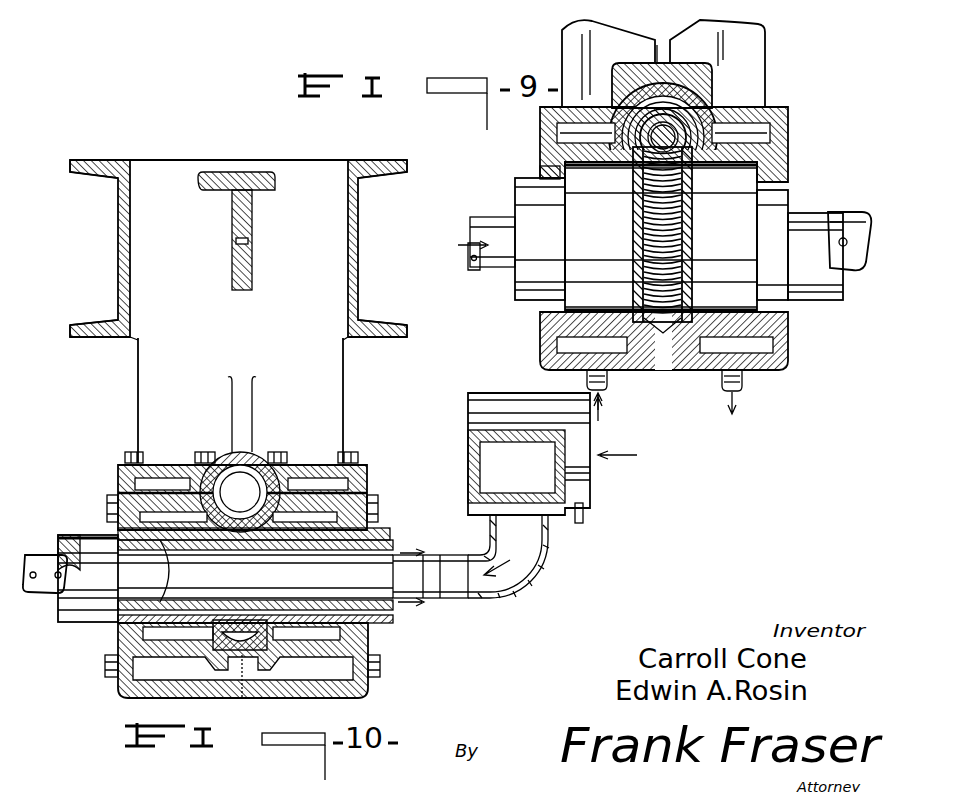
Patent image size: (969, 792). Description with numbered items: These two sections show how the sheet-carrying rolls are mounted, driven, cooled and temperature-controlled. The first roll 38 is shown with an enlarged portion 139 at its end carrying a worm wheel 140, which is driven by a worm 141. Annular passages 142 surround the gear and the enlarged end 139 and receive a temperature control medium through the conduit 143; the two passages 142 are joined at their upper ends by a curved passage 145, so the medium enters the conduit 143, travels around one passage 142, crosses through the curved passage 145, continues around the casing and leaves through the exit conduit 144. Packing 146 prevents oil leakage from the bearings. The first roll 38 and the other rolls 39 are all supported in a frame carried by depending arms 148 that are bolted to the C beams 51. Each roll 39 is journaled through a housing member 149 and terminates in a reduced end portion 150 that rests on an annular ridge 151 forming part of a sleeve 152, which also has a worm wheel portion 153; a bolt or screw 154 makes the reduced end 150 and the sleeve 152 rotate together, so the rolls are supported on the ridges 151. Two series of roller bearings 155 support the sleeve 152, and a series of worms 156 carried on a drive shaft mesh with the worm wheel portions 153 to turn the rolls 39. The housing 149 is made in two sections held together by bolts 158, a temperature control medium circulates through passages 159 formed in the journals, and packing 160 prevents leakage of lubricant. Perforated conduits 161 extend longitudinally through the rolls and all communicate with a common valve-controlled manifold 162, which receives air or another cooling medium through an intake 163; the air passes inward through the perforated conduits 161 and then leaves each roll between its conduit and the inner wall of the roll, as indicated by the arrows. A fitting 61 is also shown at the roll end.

In FIG. 9, the first roll 38 is at (800, 183).
In FIG. 10, the rolls 39 is at (97, 595).
In FIG. 10, the C beams 51 is at (117, 235).
In FIG. 9, the fitting 61 is at (848, 265).
In FIG. 9, the enlarged portion 139 is at (777, 149).
In FIG. 9, the worm wheel 140 is at (642, 222).
In FIG. 9, the worm 141 is at (713, 93).
In FIG. 9, the passages 142 is at (567, 128).
In FIG. 9, the conduit 143 is at (607, 382).
In FIG. 9, the exit conduit 144 is at (743, 383).
In FIG. 9, the curved passage 145 is at (668, 76).
In FIG. 9, the packing 146 is at (541, 168).
In FIG. 9, the depending arms 148 is at (750, 37).
In FIG. 10, the depending arms 148 is at (327, 291).
In FIG. 10, the members 149 is at (377, 495).
In FIG. 10, the reduced end portion 150 is at (133, 557).
In FIG. 10, the annular ridge 151 is at (293, 462).
In FIG. 10, the sleeve 152 is at (353, 460).
In FIG. 10, the worm wheel portion 153 is at (228, 452).
In FIG. 10, the bolt or screw 154 is at (387, 528).
In FIG. 10, the roller bearings 155 is at (127, 462).
In FIG. 10, the worms 156 is at (255, 455).
In FIG. 10, the bolts 158 is at (390, 502).
In FIG. 10, the passages 159 is at (155, 667).
In FIG. 10, the packing 160 is at (367, 632).
In FIG. 10, the perforated conduits 161 is at (38, 560).
In FIG. 10, the manifold 162 is at (580, 480).
In FIG. 10, the intake 163 is at (573, 435).